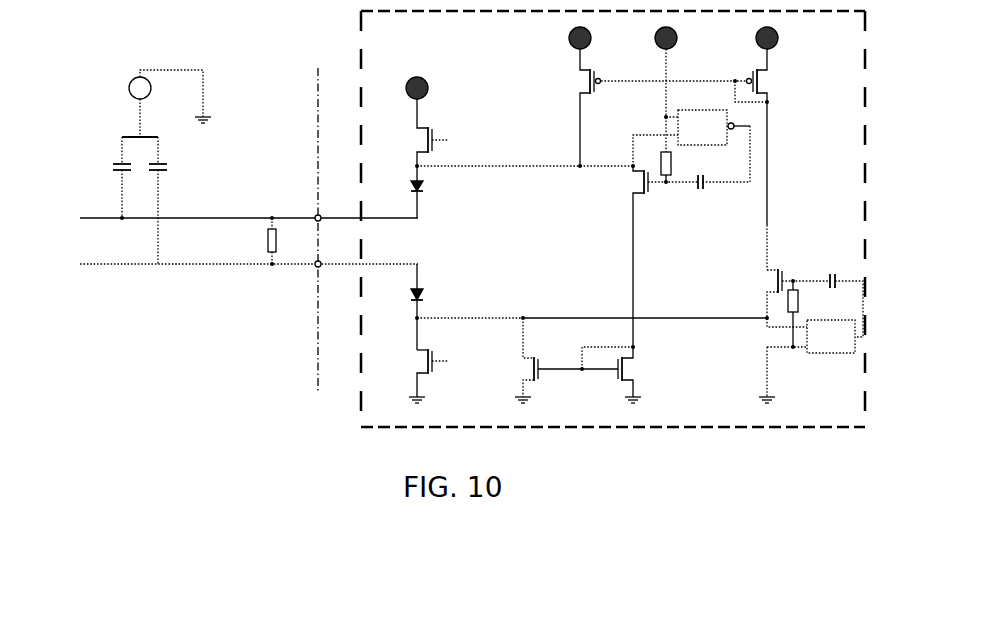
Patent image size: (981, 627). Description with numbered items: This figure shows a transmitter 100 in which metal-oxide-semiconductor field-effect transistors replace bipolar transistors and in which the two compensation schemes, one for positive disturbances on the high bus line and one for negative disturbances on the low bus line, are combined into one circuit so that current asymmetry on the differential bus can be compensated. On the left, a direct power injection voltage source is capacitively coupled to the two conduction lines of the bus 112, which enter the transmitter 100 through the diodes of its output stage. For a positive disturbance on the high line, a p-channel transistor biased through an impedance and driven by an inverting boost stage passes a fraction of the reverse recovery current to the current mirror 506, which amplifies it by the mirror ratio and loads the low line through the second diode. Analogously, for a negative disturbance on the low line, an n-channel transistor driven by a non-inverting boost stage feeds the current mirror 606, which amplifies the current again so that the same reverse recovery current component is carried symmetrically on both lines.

The transmitter 100 is at (597, 428).
The CAN bus 112 is at (194, 286).
The current mirror 506 is at (600, 416).
The current mirror 606 is at (780, 102).